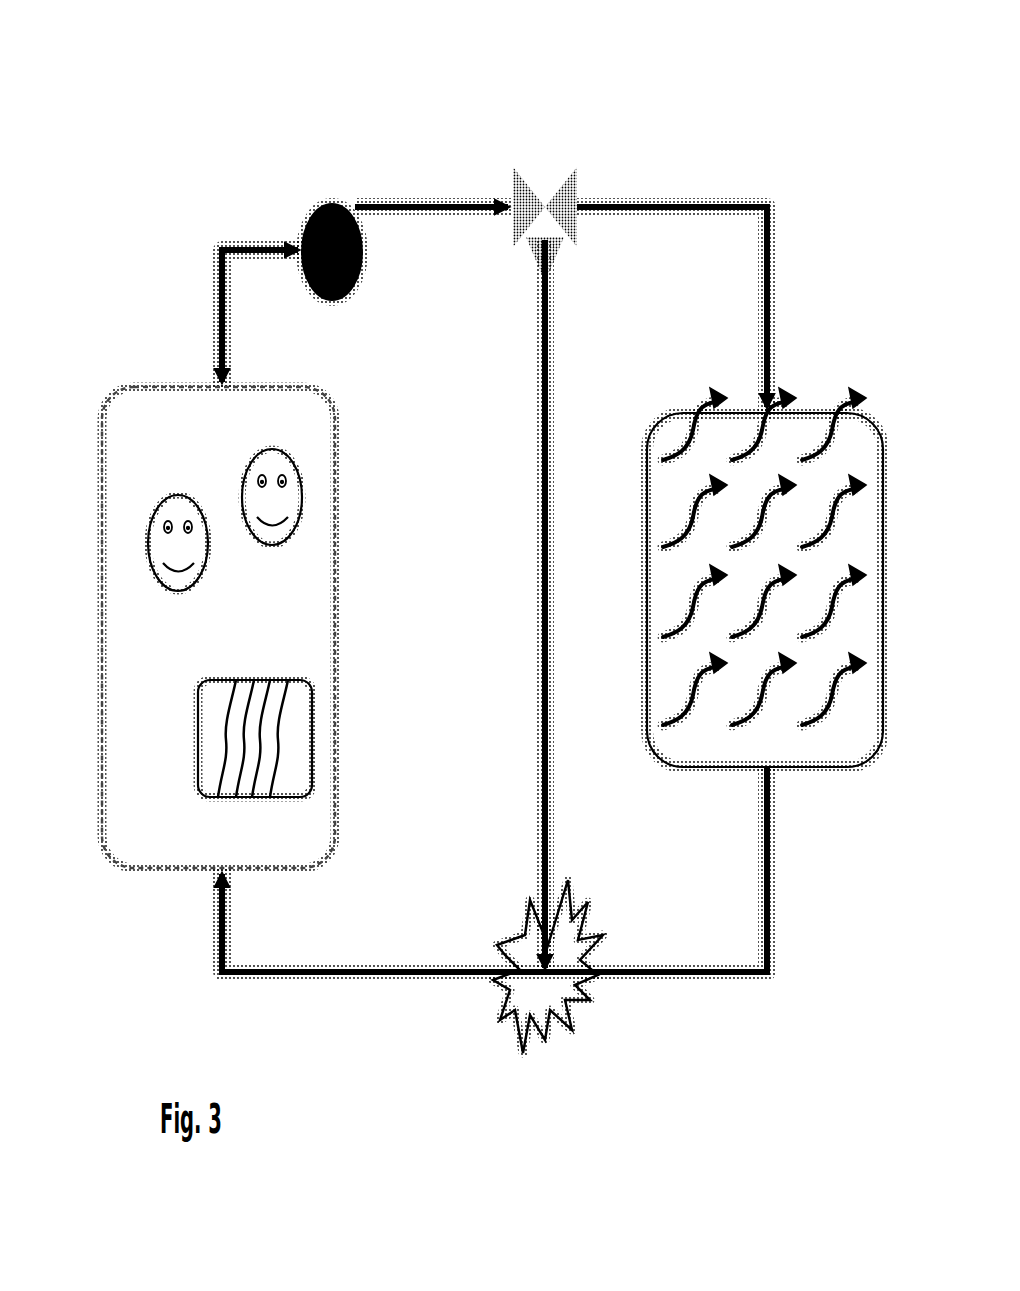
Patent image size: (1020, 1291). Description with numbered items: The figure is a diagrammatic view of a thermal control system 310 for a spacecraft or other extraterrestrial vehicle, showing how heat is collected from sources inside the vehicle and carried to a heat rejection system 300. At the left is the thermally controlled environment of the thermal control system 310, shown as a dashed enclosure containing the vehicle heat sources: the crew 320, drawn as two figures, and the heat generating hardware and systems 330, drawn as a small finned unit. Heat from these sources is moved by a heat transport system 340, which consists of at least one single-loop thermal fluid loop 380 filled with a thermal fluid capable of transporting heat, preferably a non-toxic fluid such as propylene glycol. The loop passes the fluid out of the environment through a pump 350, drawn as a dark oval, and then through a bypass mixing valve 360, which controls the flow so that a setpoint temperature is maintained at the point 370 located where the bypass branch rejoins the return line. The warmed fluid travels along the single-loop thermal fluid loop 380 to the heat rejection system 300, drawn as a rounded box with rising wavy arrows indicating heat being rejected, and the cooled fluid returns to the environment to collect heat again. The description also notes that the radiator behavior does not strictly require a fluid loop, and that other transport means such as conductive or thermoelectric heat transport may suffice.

The heat rejection system 300 is at (812, 413).
The thermal control system 310 is at (223, 92).
The crew 320 is at (158, 505).
The heat generating hardware and systems 330 is at (312, 748).
The heat transport system 340 is at (448, 205).
The pump 350 is at (368, 250).
The bypass mixing valve 360 is at (543, 198).
The setpoint temperature location 370 is at (530, 950).
The single-loop thermal fluid loop 380 is at (691, 198).